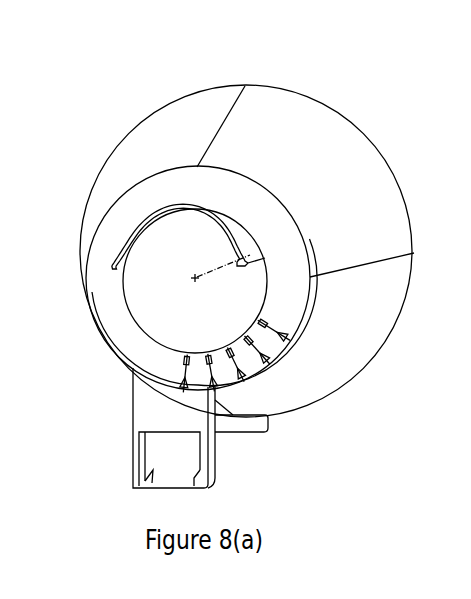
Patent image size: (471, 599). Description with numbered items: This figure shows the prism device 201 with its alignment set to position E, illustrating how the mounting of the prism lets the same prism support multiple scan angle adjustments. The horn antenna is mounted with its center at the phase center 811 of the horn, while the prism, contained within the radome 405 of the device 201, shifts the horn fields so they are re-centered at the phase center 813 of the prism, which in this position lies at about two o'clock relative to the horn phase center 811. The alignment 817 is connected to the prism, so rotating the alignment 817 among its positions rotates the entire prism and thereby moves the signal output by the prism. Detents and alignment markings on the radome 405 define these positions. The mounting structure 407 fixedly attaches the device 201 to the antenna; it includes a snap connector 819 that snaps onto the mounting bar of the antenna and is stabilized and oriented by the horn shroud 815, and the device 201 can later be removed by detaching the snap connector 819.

The device 201 is at (117, 86).
The radome 405 is at (393, 167).
The mounting structure 407 is at (132, 390).
The phase center of the horn 811 is at (195, 278).
The phase center of the prism 813 is at (247, 257).
The horn shroud 815 is at (205, 217).
The alignment 817 is at (253, 323).
The snap connector 819 is at (152, 447).